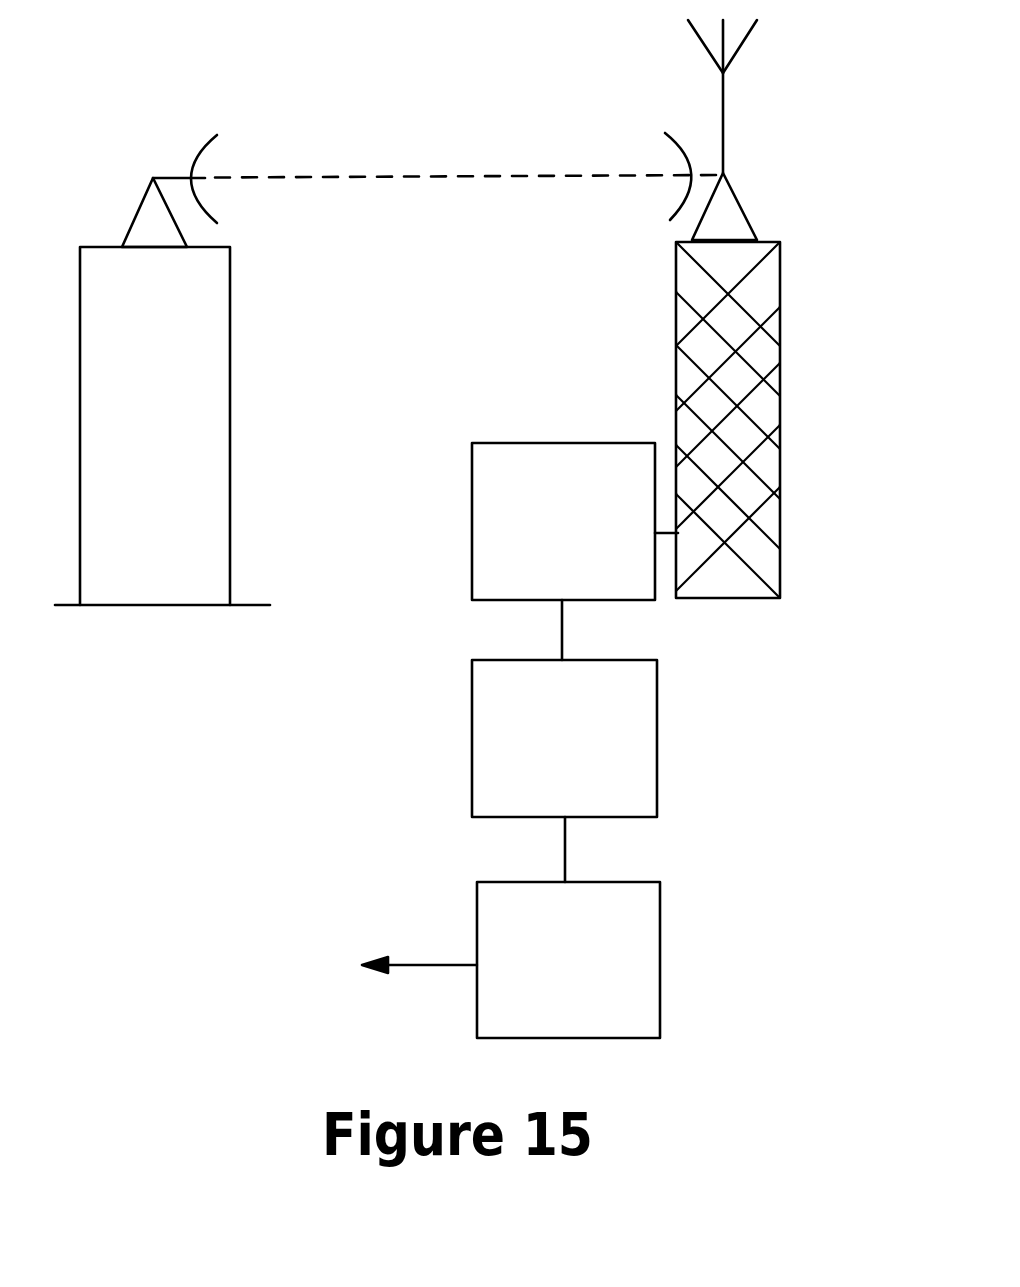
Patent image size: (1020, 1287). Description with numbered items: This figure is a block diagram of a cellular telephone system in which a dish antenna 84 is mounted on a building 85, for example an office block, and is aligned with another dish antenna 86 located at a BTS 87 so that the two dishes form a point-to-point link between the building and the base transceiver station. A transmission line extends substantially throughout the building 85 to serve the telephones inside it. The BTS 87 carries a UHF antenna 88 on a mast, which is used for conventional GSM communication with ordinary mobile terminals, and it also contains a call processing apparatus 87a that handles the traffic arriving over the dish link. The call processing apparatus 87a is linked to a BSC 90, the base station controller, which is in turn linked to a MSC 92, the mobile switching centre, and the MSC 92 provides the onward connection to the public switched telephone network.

The dish antenna 84 is at (217, 128).
The building 85 is at (165, 595).
The dish antenna 86 is at (680, 210).
The BTS 87 is at (822, 342).
The call processing apparatus 87a is at (487, 525).
The UHF antenna 88 is at (723, 122).
The BSC 90 is at (657, 735).
The MSC 92 is at (650, 949).